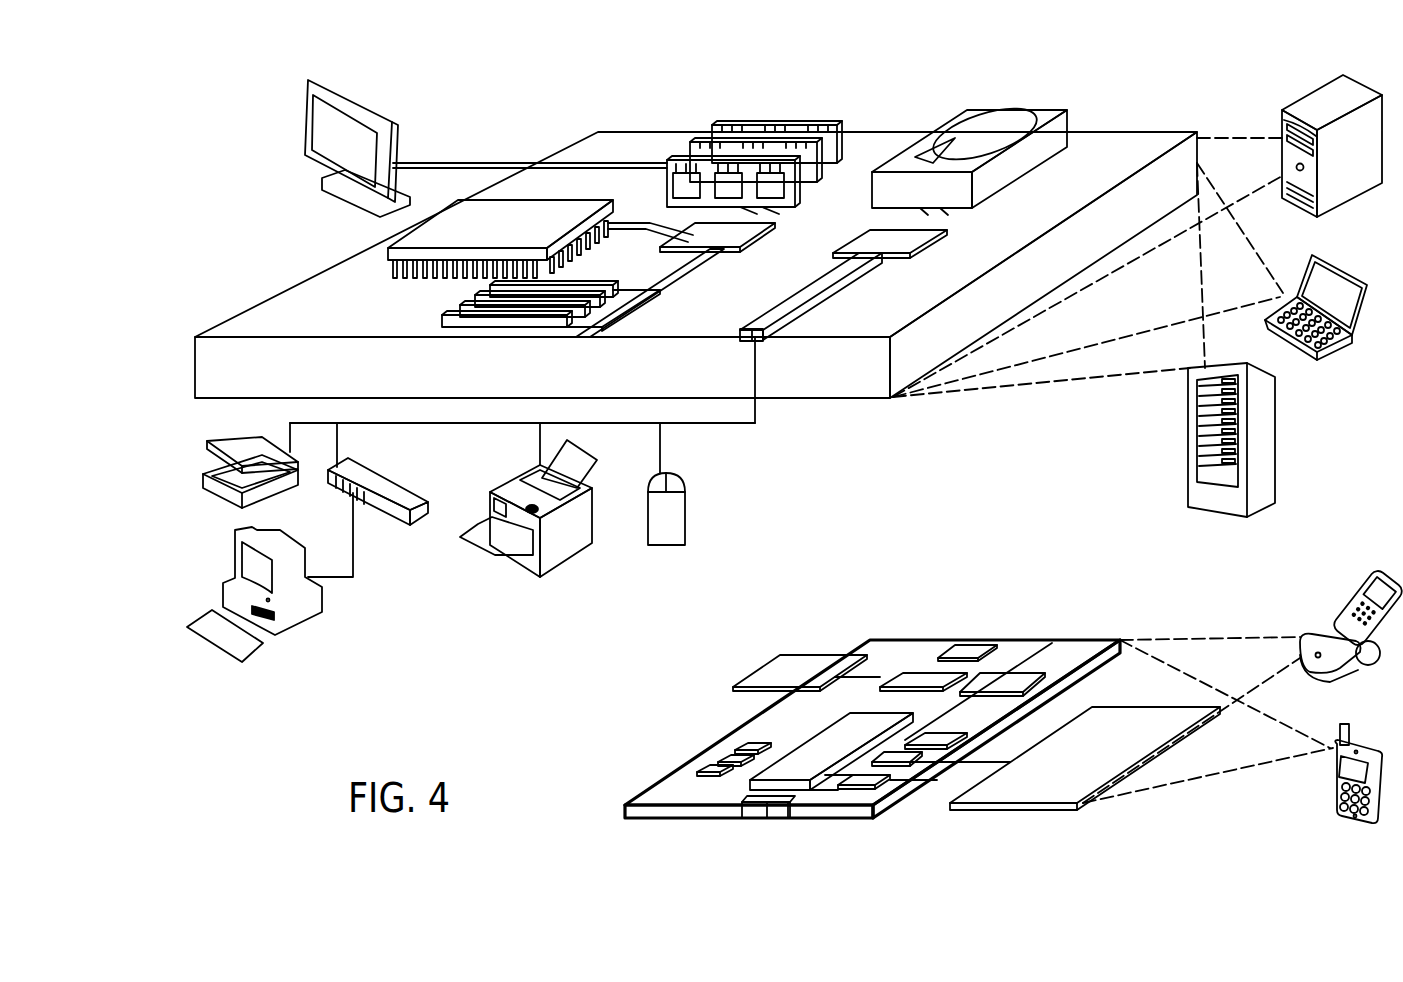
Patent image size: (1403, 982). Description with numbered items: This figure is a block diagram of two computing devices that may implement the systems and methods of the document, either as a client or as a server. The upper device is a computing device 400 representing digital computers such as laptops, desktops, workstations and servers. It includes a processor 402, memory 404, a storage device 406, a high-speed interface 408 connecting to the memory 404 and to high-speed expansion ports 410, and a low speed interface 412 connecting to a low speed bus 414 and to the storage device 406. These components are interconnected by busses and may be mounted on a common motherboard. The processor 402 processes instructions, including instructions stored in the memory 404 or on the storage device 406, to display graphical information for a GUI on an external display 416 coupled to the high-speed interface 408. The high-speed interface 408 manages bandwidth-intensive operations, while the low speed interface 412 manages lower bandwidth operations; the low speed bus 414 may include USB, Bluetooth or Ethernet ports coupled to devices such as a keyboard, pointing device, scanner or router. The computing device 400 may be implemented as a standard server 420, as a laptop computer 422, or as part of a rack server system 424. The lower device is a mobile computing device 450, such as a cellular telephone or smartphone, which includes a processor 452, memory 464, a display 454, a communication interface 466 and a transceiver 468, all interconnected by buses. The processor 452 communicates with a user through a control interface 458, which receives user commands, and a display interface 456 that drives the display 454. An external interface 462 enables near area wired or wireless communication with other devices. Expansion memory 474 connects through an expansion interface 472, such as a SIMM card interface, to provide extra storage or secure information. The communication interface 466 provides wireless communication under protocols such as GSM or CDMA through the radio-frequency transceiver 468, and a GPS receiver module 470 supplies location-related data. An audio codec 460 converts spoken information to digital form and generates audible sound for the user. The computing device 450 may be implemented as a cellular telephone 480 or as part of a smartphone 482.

The computing device 400 is at (512, 100).
The processor 402 is at (350, 258).
The memory 404 is at (728, 138).
The storage device 406 is at (962, 135).
The high-speed interface 408 is at (694, 234).
The high-speed expansion ports 410 is at (460, 306).
The low speed interface 412 is at (892, 240).
The low speed bus 414 is at (755, 338).
The display 416 is at (291, 88).
The standard server 420 is at (1282, 116).
The laptop computer 422 is at (1312, 256).
The rack server system 424 is at (1188, 468).
The computing device 450 is at (872, 683).
The processor 452 is at (805, 795).
The display 454 is at (1083, 806).
The display interface 456 is at (887, 802).
The control interface 458 is at (925, 775).
The audio codec 460 is at (977, 793).
The external interface 462 is at (767, 810).
The memory 464 is at (718, 763).
The communication interface 466 is at (925, 682).
The transceiver 468 is at (1002, 677).
The GPS receiver module 470 is at (973, 645).
The expansion interface 472 is at (843, 652).
The expansion memory 474 is at (760, 656).
The cellular telephone 480 is at (1356, 588).
The smartphone 482 is at (1340, 726).